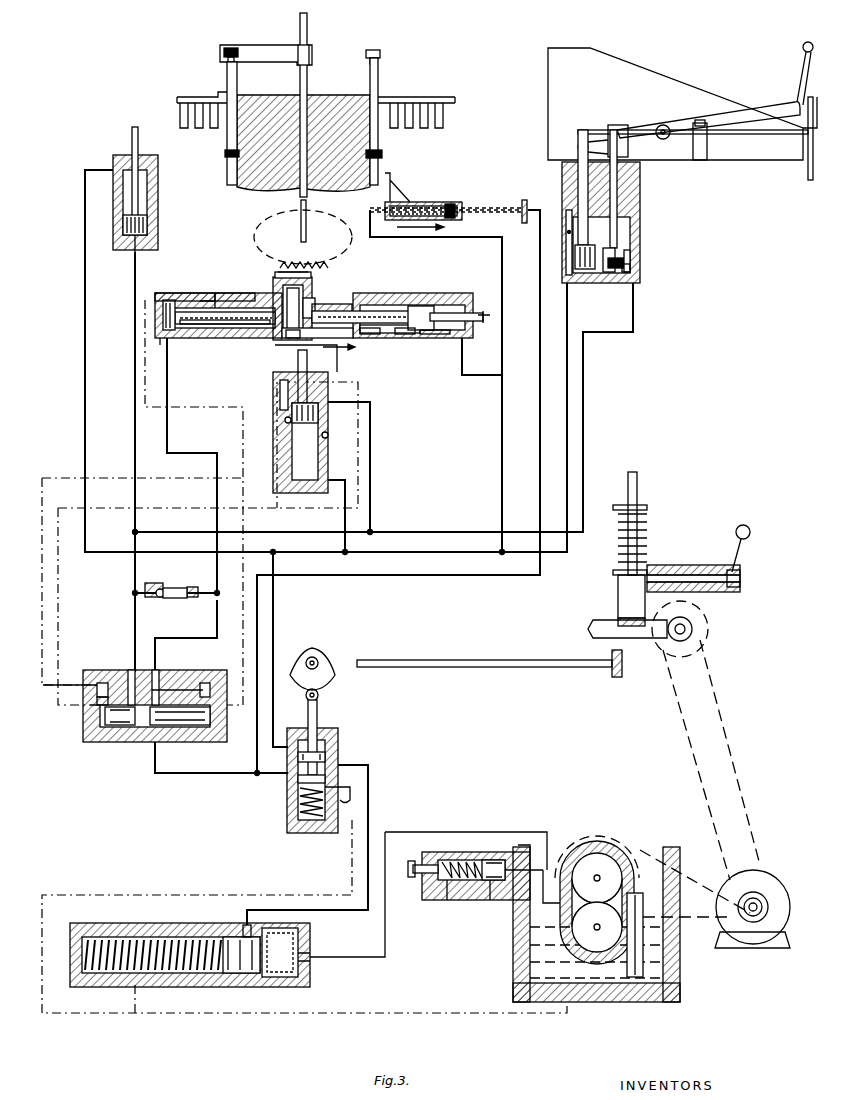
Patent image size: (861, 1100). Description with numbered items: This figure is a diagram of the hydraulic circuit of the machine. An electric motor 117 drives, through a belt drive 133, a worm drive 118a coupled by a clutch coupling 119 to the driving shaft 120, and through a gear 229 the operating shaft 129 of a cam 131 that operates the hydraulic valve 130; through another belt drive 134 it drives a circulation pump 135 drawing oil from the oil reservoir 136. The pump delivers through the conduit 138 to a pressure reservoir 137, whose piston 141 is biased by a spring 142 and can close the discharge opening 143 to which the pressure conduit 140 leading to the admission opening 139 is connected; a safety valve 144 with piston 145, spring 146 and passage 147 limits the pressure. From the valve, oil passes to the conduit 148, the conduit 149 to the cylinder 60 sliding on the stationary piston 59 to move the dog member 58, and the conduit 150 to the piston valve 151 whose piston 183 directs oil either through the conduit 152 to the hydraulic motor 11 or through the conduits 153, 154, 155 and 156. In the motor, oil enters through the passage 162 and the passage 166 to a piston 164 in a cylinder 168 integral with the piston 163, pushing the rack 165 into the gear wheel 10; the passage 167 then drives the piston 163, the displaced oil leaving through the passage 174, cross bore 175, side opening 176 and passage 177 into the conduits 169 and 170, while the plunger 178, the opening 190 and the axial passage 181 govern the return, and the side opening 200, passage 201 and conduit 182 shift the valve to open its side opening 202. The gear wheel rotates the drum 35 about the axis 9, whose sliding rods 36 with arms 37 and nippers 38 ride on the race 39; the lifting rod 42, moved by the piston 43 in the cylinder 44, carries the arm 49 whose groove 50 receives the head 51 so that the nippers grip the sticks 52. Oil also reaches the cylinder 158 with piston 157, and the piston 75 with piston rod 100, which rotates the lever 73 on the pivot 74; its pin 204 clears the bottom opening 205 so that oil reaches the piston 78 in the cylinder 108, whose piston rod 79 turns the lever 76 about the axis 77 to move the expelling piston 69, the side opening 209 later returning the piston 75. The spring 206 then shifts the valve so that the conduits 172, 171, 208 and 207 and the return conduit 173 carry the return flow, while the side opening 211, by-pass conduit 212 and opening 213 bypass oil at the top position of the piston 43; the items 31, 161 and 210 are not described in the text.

The vertical axis 9 is at (308, 36).
The gear wheel 10 is at (348, 250).
The hydraulic motor 11 is at (388, 300).
The frame 31 is at (578, 56).
The drum 35 is at (332, 100).
The sliding rod 36 is at (227, 80).
The radial arm 37 is at (180, 98).
The nippers 38 is at (158, 100).
The annular race 39 is at (382, 152).
The lifting rod 42 is at (310, 75).
The hydraulic piston 43 is at (318, 410).
The cylinder 44 is at (318, 440).
The lifting arm 49 is at (275, 45).
The dove tail groove 50 is at (224, 52).
The head 51 is at (232, 48).
The stick 52 is at (806, 182).
The dog member 58 is at (390, 177).
The stationary piston 59 is at (450, 205).
The cylinder 60 is at (425, 204).
The piston 69 is at (808, 72).
The double armed lever 73 is at (756, 140).
The pivot 74 is at (705, 145).
The hydraulic piston 75 is at (628, 252).
The lever 76 is at (732, 112).
The axis 77 is at (668, 125).
The hydraulic piston 78 is at (585, 268).
The piston rod 79 is at (572, 178).
The piston rod 100 is at (618, 210).
The cylinder 108 is at (568, 240).
The electric motor 117 is at (760, 870).
The worm drive 118a is at (692, 618).
The clutch coupling 119 is at (618, 612).
The driving shaft 120 is at (638, 487).
The operating shaft 129 is at (498, 667).
The hydraulic valve 130 is at (325, 757).
The cam 131 is at (332, 680).
The belt drive 133 is at (740, 748).
The belt drive 134 is at (657, 847).
The circulation pump 135 is at (610, 848).
The oil reservoir 136 is at (660, 962).
The pressure reservoir 137 is at (175, 935).
The conduit 138 is at (505, 852).
The admission opening 139 is at (325, 757).
The pressure conduit 140 is at (370, 781).
The piston 141 is at (228, 973).
The spring 142 is at (168, 973).
The discharge opening 143 is at (246, 925).
The hydraulic safety valve 144 is at (462, 860).
The piston 145 is at (500, 860).
The spring 146 is at (448, 860).
The passage 147 is at (492, 900).
The conduit 148 is at (275, 773).
The conduit 149 is at (540, 442).
The conduit 150 is at (160, 773).
The piston valve 151 is at (125, 730).
The conduit 152 is at (167, 430).
The conduit 153 is at (135, 573).
The conduit 154 is at (583, 442).
The conduit 155 is at (372, 484).
The conduit 156 is at (135, 388).
The piston 157 is at (150, 220).
The cylinder 158 is at (150, 232).
The cylinder 161 is at (132, 133).
The passage 162 is at (182, 338).
The piston 163 is at (218, 300).
The piston 164 is at (315, 340).
The coupling member 165 is at (314, 265).
The passage 166 is at (228, 338).
The passage 167 is at (276, 300).
The cylinder 168 is at (290, 340).
The conduit 169 is at (470, 375).
The conduit 170 is at (502, 262).
The conduit 171 is at (458, 552).
The conduit 172 is at (275, 612).
The return conduit 173 is at (352, 872).
The passage 174 is at (414, 306).
The cross bore 175 is at (382, 340).
The side opening 176 is at (410, 340).
The longitudinal passage 177 is at (436, 340).
The plunger 178 is at (445, 313).
The axial passage 181 is at (330, 290).
The conduit 182 is at (182, 407).
The piston 183 is at (120, 730).
The opening 190 is at (306, 305).
The side opening 200 is at (205, 300).
The passage 201 is at (165, 295).
The side opening 202 is at (128, 672).
The pin 204 is at (632, 274).
The bottom opening 205 is at (626, 268).
The spring 206 is at (298, 820).
The conduit 207 is at (352, 802).
The conduit 208 is at (85, 388).
The side opening 209 is at (620, 232).
The line 210 is at (345, 524).
The side opening 211 is at (282, 436).
The by-pass conduit 212 is at (285, 392).
The opening 213 is at (90, 715).
The gear 229 is at (612, 678).